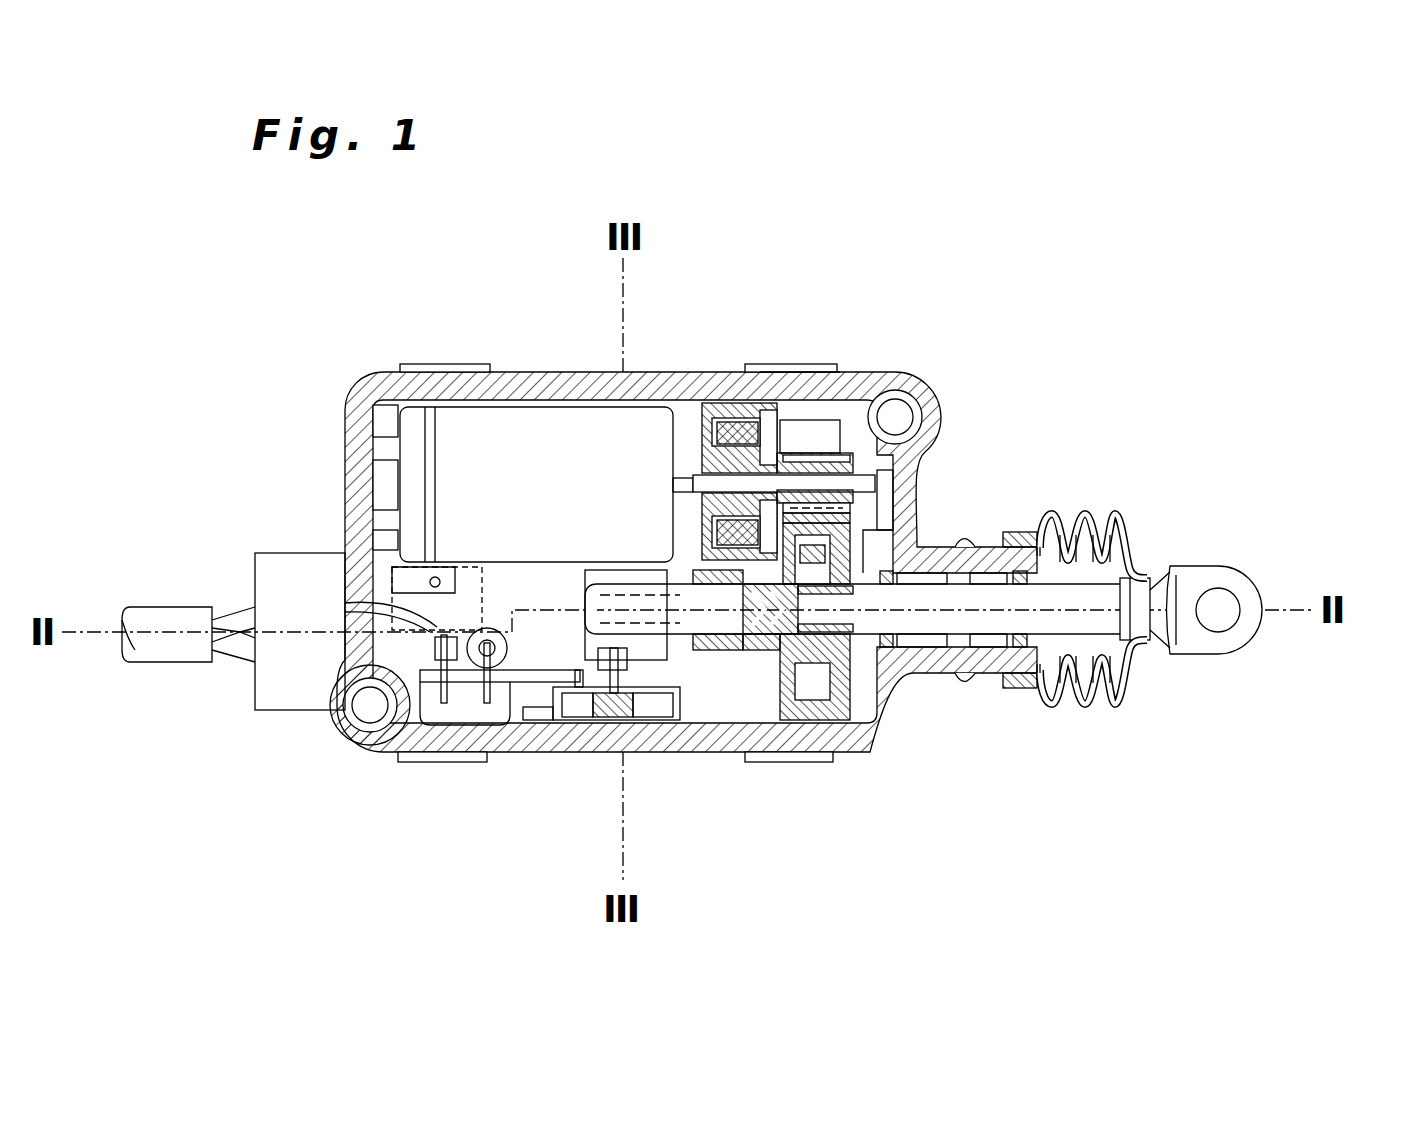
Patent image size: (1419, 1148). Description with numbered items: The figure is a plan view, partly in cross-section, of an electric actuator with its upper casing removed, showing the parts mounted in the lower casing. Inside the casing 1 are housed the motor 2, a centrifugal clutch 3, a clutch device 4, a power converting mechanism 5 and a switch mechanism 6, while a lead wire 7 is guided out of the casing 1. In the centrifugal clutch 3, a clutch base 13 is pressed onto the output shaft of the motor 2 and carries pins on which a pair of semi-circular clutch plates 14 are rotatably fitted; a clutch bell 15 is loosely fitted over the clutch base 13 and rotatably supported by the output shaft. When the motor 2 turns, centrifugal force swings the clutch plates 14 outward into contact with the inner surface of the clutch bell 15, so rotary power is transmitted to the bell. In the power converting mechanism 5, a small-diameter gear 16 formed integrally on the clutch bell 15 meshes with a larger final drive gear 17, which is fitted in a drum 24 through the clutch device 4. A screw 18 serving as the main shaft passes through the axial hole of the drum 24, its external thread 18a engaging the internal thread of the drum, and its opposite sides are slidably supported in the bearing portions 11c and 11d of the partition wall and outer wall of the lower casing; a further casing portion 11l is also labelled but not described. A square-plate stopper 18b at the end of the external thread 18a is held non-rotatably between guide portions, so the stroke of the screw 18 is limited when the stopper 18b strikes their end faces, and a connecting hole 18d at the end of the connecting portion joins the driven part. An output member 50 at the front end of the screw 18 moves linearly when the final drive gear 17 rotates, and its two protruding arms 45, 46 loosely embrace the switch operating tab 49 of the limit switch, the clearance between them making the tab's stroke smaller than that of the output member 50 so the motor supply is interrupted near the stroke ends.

The casing 1 is at (518, 372).
The motor 2 is at (468, 445).
The centrifugal clutch 3 is at (790, 385).
The clutch device 4 is at (865, 650).
The power converting mechanism 5 is at (676, 634).
The switch mechanism 6 is at (612, 652).
The lead wire 7 is at (177, 662).
The clutch base 13 is at (713, 405).
The clutch plates 14 is at (730, 405).
The clutch bell 15 is at (835, 440).
The gear 16 is at (850, 455).
The final drive gear 17 is at (885, 540).
The screw 18 is at (1120, 545).
The external thread 18a is at (910, 623).
The stopper 18b is at (960, 670).
The connecting hole 18d is at (1235, 640).
The bearing portion 11c is at (762, 737).
The bearing portion 11d is at (865, 565).
The retaining ring 11l is at (1000, 672).
The drum 24 is at (720, 653).
The arm 45 is at (595, 656).
The arm 46 is at (660, 693).
The switch operating tab 49 is at (555, 700).
The output member 50 is at (593, 570).